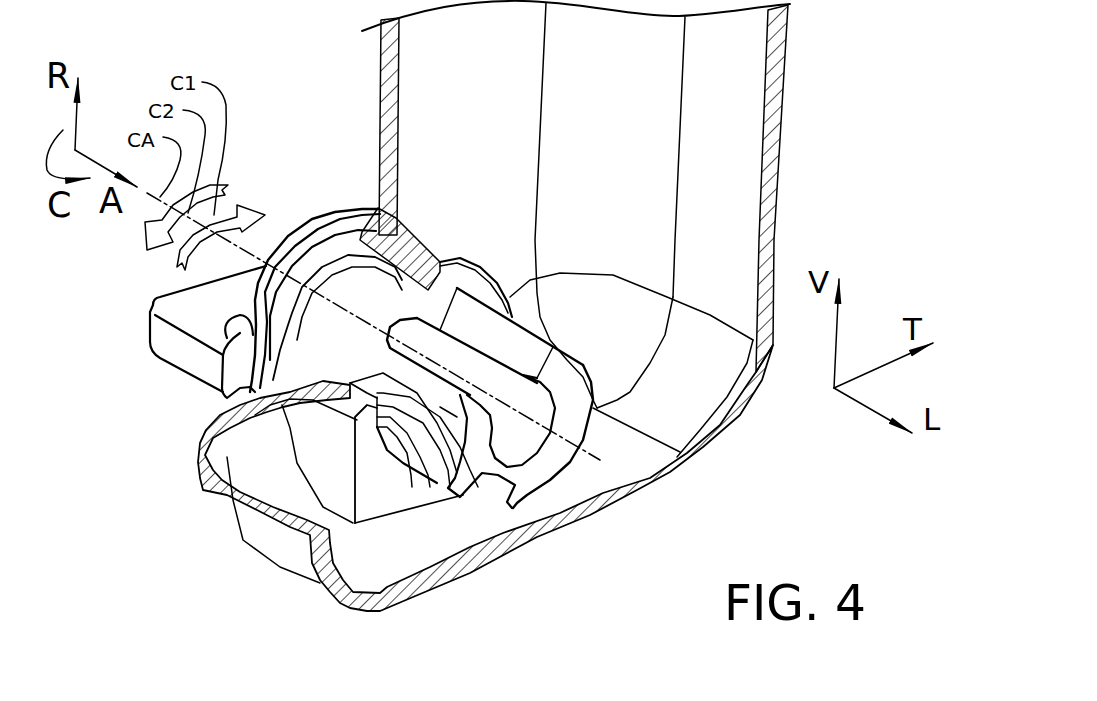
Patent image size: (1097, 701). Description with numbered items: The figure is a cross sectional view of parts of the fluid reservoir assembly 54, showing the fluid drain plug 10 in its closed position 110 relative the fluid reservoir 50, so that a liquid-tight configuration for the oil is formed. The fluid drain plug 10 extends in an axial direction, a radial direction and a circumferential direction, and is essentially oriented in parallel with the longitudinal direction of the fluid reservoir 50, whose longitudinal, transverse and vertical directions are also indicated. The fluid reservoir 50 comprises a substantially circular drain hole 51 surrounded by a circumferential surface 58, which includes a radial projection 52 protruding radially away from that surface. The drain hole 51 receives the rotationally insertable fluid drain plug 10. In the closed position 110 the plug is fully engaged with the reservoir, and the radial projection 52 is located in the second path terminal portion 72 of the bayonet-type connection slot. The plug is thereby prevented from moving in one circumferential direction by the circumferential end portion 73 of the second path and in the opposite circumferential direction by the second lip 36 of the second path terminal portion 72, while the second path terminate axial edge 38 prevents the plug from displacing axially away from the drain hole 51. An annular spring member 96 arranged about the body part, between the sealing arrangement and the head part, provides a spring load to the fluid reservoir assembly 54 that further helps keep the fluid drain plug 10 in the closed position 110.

The fluid drain plug 10 is at (283, 195).
The second lip 36 is at (412, 487).
The second path terminate axial edge 38 is at (450, 487).
The fluid reservoir 50 is at (726, 162).
The drain hole 51 is at (327, 263).
The radial projection 52 is at (430, 487).
The fluid reservoir assembly 54 is at (815, 68).
The circumferential surface 58 is at (430, 265).
The second path terminal portion 72 is at (478, 487).
The circumferential end portion 73 is at (470, 490).
The annular spring member 96 is at (270, 367).
The closed position 110 is at (827, 120).